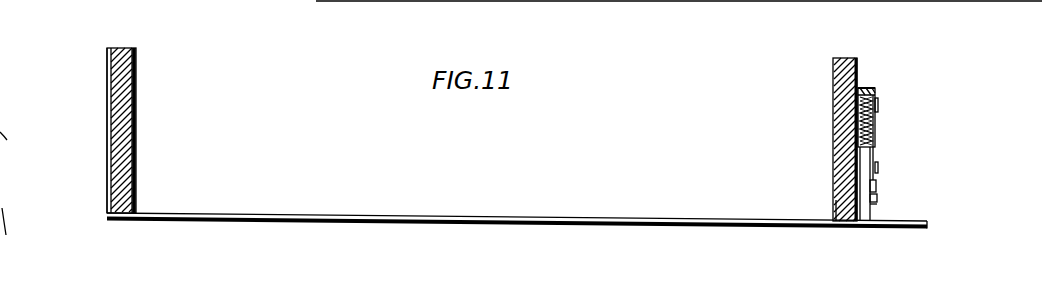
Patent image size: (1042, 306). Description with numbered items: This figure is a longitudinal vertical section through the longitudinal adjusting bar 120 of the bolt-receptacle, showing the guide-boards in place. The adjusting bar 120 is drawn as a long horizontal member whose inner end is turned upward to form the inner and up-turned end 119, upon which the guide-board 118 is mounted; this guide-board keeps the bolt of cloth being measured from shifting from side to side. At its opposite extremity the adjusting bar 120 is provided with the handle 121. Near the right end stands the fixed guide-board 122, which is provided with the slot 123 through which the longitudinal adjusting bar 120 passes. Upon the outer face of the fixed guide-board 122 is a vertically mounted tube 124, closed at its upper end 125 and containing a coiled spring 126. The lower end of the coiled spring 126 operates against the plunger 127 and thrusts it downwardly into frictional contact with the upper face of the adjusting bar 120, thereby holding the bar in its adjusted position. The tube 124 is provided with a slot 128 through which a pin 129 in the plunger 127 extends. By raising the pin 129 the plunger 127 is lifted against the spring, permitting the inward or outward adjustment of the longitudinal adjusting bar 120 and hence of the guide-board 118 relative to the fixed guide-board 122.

The guide-board 118 is at (136, 87).
The inner and up-turned end 119 is at (108, 117).
The adjusting bar 120 is at (390, 206).
The handle 121 is at (923, 221).
The fixed guide-board 122 is at (835, 131).
The slot 123 is at (838, 220).
The tube 124 is at (876, 93).
The closed upper end 125 is at (862, 88).
The coiled spring 126 is at (878, 117).
The plunger 127 is at (863, 155).
The slot 128 is at (877, 196).
The pin 129 is at (877, 200).